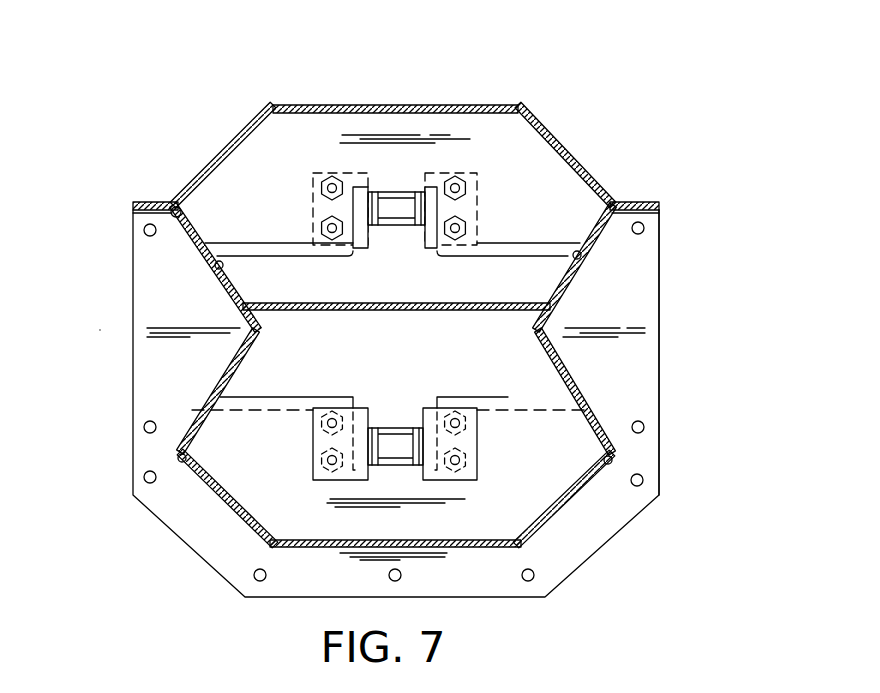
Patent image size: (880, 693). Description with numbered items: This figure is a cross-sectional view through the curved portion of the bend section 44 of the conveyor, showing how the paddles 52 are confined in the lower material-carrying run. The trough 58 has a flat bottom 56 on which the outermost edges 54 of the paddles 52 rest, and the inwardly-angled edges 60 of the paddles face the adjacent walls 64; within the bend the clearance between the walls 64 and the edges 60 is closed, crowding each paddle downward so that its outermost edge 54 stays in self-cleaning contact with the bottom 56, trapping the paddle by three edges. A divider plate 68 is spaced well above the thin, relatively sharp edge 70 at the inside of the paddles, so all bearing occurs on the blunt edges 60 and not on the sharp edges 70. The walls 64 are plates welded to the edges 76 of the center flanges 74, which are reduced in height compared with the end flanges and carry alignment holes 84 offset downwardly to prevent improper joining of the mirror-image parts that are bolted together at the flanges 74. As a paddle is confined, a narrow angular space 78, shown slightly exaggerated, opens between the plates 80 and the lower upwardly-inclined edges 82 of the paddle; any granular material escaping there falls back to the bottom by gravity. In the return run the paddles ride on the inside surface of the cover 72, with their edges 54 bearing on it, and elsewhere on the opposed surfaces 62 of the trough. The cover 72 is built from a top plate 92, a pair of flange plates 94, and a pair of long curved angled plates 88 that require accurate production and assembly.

The bend section 44 is at (685, 295).
The hanger bracket assembly 52 is at (300, 197).
The outermost edges of the paddles 54 is at (483, 107).
The flat bottom 56 is at (472, 545).
The trough 58 is at (595, 368).
The inwardly-angled edges 60 is at (174, 205).
The opposed surfaces 62 is at (216, 264).
The walls 64 is at (222, 380).
The divider plate 68 is at (432, 278).
The sharp edge 70 is at (525, 256).
The cover 72 is at (403, 100).
The center flange 74 is at (656, 406).
The edges of center flanges 76 is at (242, 370).
The narrow angular space 78 is at (207, 468).
The plates 80 is at (235, 512).
The lower upwardly-inclined edges 82 is at (180, 460).
The alignment holes 84 is at (644, 430).
The angled plates 88 is at (257, 120).
The top plate 92 is at (348, 107).
The flange plates 94 is at (158, 202).